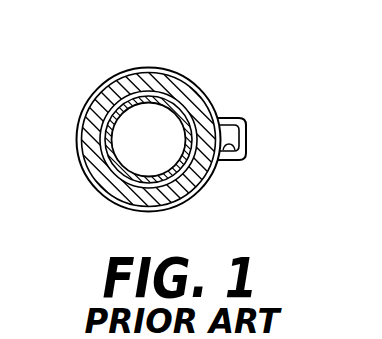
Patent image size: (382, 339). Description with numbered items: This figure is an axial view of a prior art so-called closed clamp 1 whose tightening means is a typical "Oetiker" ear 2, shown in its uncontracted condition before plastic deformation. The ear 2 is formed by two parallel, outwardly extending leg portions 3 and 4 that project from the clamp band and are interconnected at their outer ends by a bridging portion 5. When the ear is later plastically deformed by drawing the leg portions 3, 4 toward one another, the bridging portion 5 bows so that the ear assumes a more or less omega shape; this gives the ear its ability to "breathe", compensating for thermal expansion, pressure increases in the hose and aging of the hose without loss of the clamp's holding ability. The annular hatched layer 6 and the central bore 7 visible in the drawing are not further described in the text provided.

The closed clamp 1 is at (143, 64).
The Oetiker ear 2 is at (226, 117).
The leg portion 3 is at (244, 160).
The leg portion 4 is at (226, 125).
The bridging portion 5 is at (246, 150).
The hatched annular layer 6 is at (98, 162).
The central bore 7 is at (112, 138).